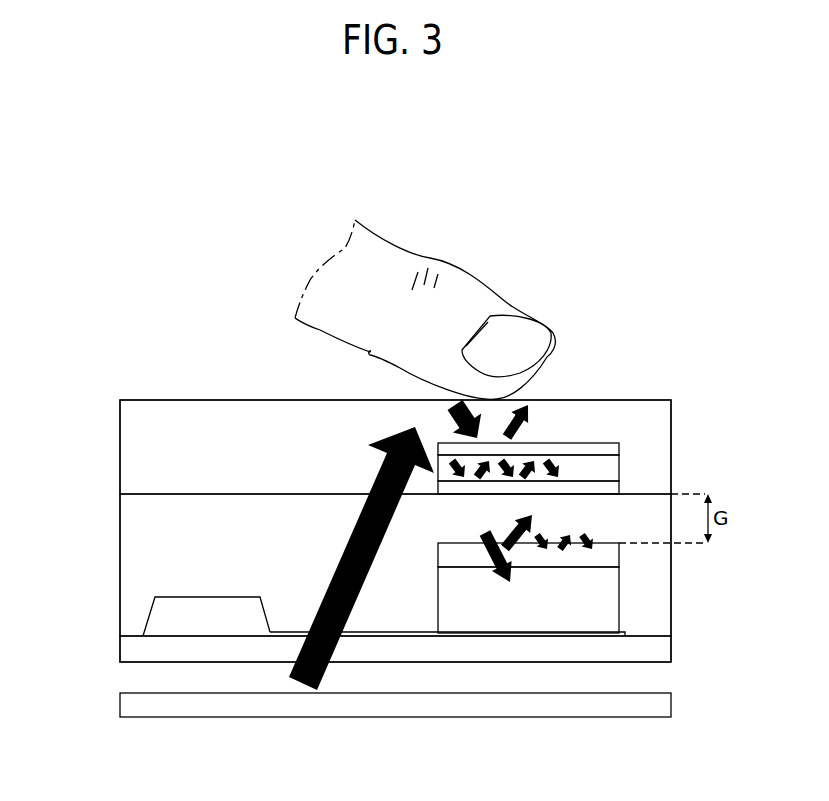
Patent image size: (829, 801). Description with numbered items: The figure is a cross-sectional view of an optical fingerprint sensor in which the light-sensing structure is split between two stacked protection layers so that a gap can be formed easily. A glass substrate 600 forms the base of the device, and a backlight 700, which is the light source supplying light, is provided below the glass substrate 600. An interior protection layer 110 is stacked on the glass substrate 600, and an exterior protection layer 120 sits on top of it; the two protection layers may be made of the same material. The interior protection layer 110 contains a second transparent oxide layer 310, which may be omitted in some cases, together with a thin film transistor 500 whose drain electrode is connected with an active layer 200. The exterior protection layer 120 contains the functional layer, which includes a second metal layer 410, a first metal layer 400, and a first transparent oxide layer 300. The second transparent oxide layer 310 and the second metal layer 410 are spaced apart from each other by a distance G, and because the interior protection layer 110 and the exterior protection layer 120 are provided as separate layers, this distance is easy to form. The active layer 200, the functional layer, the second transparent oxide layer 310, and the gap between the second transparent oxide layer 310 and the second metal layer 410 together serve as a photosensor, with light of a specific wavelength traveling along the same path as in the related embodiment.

The interior protection layer 110 is at (120, 527).
The exterior protection layer 120 is at (120, 445).
The active layer 200 is at (613, 590).
The first transparent oxide layer 300 is at (619, 470).
The second transparent oxide layer 310 is at (619, 554).
The first metal layer 400 is at (619, 450).
The second metal layer 410 is at (613, 487).
The thin film transistor 500 is at (160, 612).
The glass substrate 600 is at (671, 648).
The backlight 700 is at (120, 706).